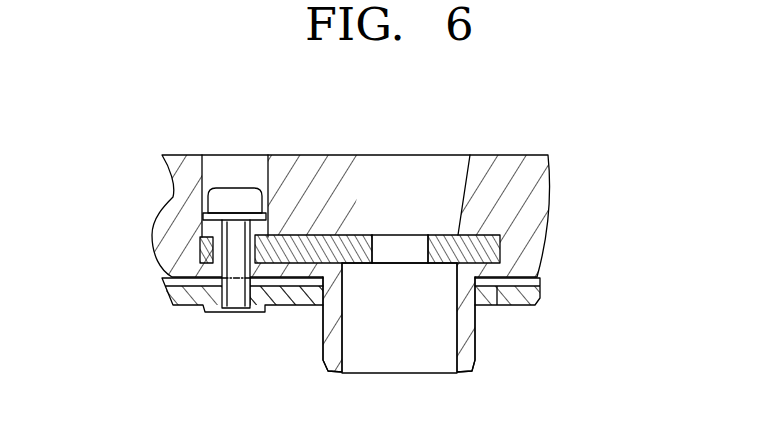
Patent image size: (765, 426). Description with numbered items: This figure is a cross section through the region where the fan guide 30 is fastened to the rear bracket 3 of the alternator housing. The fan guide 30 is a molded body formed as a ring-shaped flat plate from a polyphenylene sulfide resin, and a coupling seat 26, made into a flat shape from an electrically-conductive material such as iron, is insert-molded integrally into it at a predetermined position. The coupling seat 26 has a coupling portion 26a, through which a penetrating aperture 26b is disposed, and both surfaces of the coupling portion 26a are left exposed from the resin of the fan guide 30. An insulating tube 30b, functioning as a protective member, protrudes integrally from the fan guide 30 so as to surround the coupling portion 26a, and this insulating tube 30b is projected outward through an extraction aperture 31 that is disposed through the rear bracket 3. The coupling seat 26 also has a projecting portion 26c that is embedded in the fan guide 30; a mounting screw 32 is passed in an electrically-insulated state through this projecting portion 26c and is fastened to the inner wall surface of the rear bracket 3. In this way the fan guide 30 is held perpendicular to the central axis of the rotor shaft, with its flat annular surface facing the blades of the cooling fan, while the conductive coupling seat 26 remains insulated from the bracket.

The fan guide 30 is at (553, 161).
The insulating tube 30b is at (477, 333).
The coupling seat 26 is at (508, 239).
The coupling portion 26a is at (357, 236).
The penetrating aperture 26b is at (422, 248).
The projecting portion 26c is at (178, 224).
The mounting screw 32 is at (225, 189).
The extraction aperture 31 is at (313, 293).
The rear bracket 3 is at (548, 294).